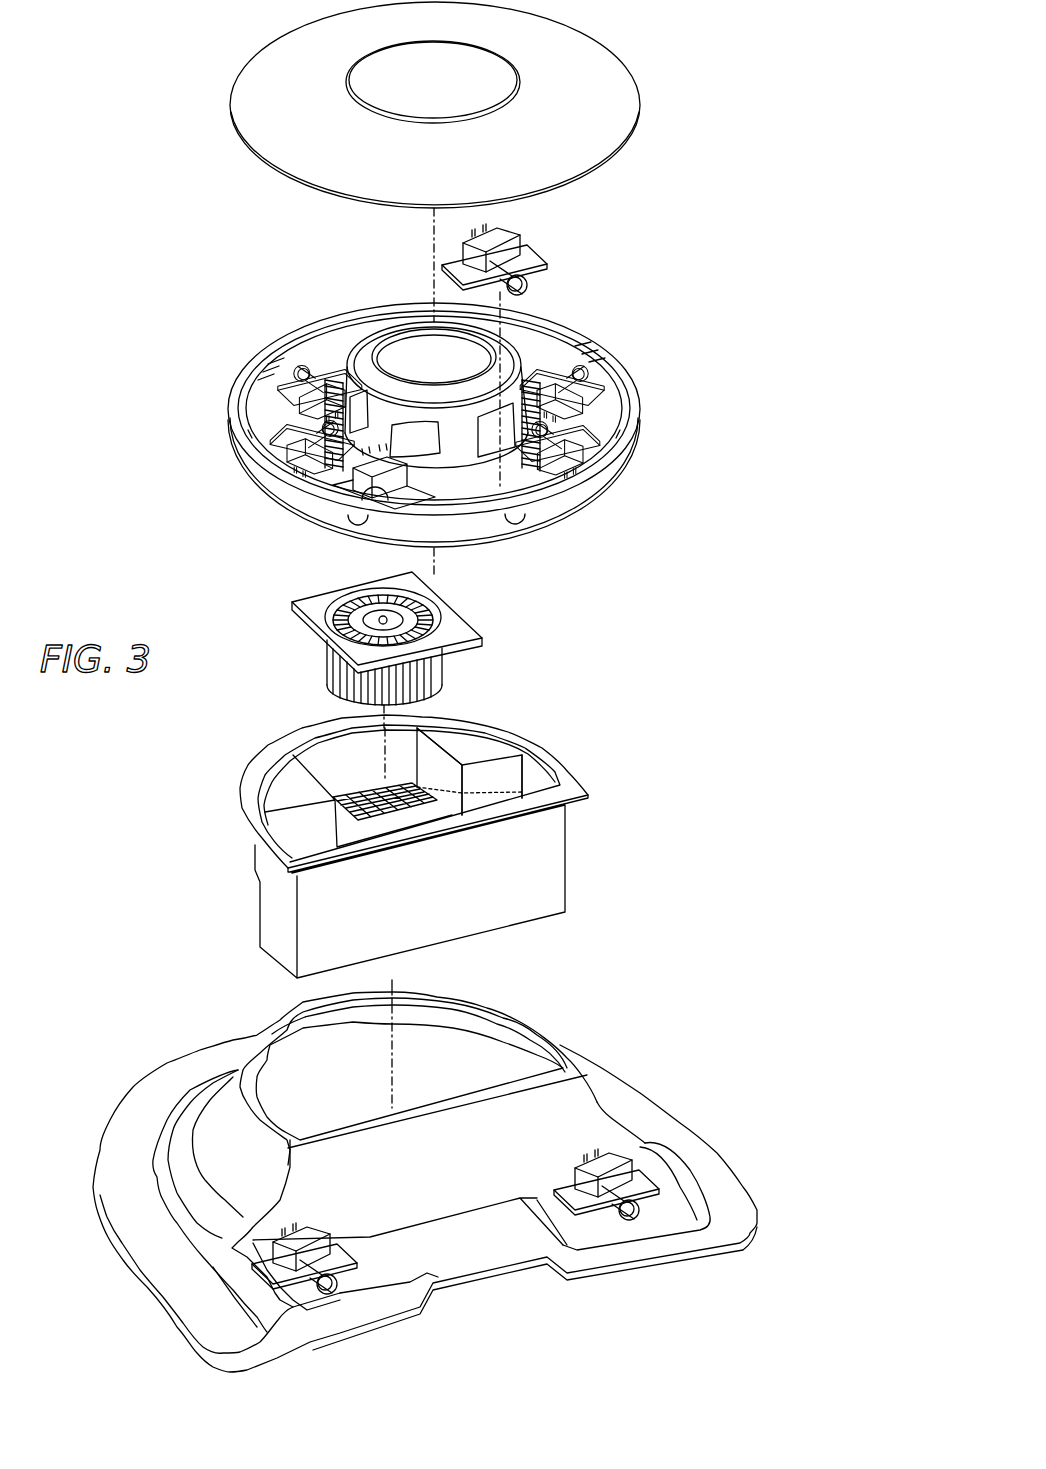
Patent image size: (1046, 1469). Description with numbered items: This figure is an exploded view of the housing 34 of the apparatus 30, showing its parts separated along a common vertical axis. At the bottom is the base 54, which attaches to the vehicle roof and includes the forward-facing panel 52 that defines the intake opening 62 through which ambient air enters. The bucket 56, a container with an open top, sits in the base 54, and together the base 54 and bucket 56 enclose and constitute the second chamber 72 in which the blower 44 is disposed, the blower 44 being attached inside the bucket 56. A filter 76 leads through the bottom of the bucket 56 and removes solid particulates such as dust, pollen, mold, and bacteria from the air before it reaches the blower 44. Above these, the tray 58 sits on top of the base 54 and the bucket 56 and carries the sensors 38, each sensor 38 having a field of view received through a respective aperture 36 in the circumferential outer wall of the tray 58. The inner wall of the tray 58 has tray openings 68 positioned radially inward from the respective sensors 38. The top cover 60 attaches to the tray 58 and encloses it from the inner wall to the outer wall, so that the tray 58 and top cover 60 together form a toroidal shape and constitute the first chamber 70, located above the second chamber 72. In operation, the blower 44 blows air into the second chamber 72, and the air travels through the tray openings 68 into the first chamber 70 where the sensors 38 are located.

The apparatus 30 is at (590, 602).
The housing 34 is at (233, 42).
The aperture 36 is at (356, 527).
The sensor 38 is at (512, 233).
The blower 44 is at (470, 618).
The forward-facing panel 52 is at (627, 1265).
The base 54 is at (663, 1097).
The bucket 56 is at (445, 835).
The tray 58 is at (617, 460).
The top cover 60 is at (592, 88).
The intake opening 62 is at (491, 1286).
The tray opening 68 is at (483, 413).
The first chamber 70 is at (515, 485).
The second chamber 72 is at (368, 827).
The filter 76 is at (555, 785).